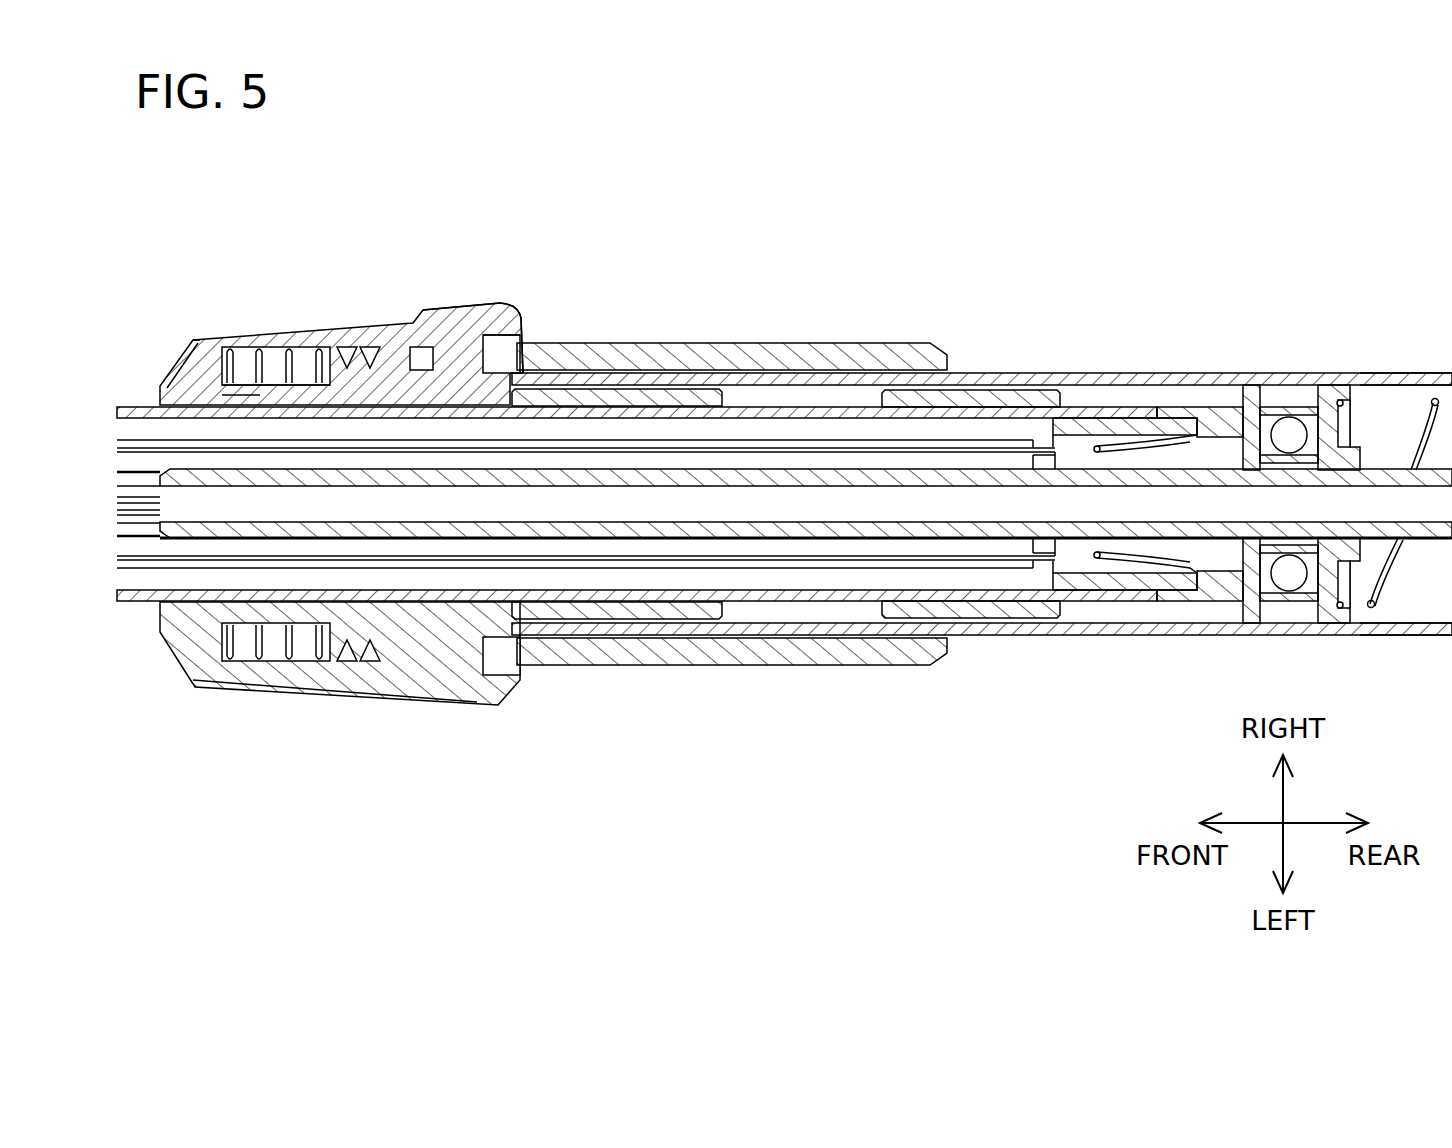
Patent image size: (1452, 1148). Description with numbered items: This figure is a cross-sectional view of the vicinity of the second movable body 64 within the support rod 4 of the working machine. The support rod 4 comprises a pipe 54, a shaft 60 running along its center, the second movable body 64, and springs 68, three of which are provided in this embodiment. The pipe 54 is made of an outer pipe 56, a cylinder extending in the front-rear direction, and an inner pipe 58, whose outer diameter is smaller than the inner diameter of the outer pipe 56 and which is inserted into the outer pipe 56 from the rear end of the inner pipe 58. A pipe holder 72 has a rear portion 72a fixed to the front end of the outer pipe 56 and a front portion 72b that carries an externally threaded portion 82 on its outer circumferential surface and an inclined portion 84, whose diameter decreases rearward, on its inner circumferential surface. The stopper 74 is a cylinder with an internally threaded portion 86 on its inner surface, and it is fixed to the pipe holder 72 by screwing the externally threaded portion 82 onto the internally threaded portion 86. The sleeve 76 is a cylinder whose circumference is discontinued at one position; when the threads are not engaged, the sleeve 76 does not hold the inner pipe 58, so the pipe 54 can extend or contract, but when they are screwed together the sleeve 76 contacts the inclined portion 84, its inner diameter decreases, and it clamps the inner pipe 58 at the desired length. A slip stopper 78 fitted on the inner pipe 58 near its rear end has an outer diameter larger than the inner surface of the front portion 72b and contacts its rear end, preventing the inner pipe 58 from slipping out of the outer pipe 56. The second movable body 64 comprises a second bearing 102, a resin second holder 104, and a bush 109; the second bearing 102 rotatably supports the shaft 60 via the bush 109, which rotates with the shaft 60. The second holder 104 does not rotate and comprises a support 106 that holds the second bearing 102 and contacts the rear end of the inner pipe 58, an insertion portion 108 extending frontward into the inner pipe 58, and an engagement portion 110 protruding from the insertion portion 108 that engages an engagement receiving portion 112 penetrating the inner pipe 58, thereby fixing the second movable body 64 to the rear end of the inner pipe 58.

The support rod 4 is at (1276, 230).
The pipe 54 is at (772, 655).
The outer pipe 56 is at (628, 636).
The inner pipe 58 is at (670, 606).
The shaft 60 is at (192, 528).
The second movable body 64 is at (1385, 402).
The springs 68 is at (1370, 608).
The pipe holder 72 is at (585, 352).
The rear portion of the pipe holder 72a is at (718, 350).
The front portion of the pipe holder 72b is at (460, 383).
The stopper 74 is at (200, 363).
The sleeve 76 is at (245, 392).
The slip stopper 78 is at (633, 395).
The externally threaded portion 82 is at (397, 363).
The inclined portion 84 is at (327, 365).
The internally threaded portion 86 is at (268, 353).
The second bearing 102 is at (1287, 420).
The second holder 104 is at (1233, 383).
The support 106 is at (1310, 390).
The insertion portion 108 is at (1130, 423).
The bush 109 is at (1332, 452).
The engagement portion 110 is at (1182, 603).
The engagement receiving portion 112 is at (1163, 602).